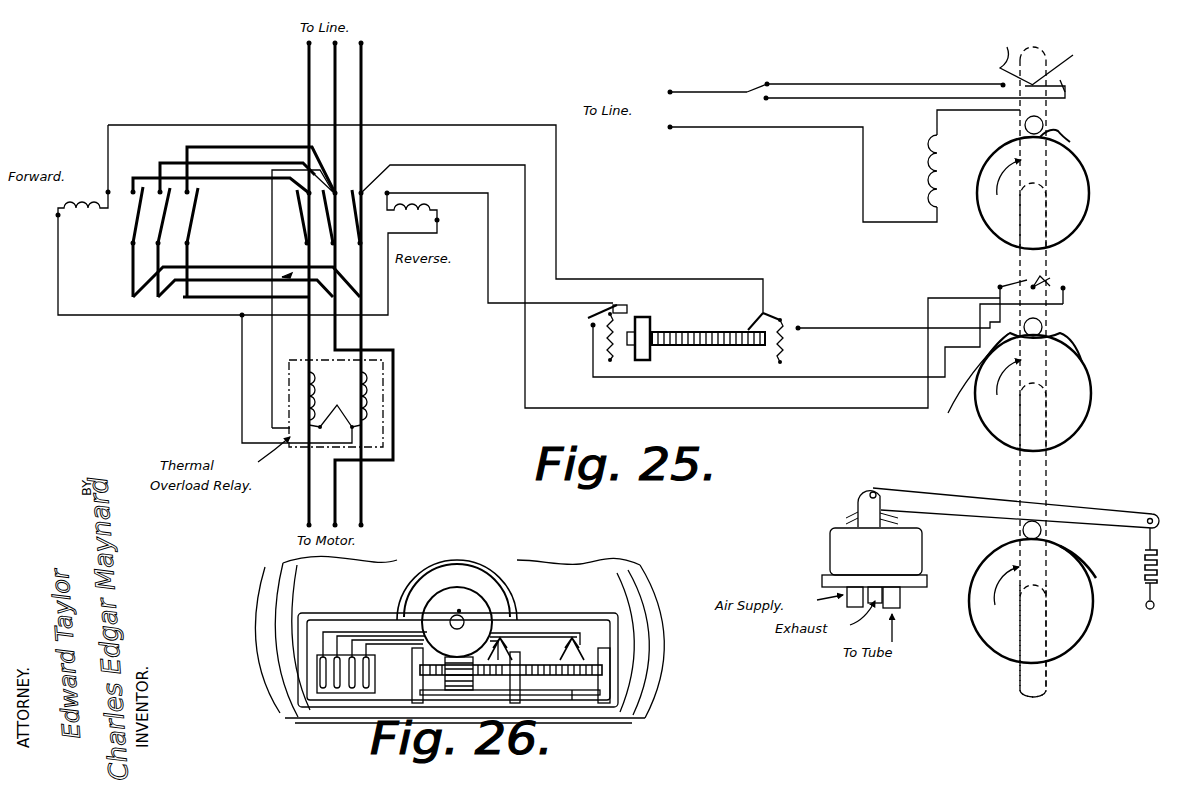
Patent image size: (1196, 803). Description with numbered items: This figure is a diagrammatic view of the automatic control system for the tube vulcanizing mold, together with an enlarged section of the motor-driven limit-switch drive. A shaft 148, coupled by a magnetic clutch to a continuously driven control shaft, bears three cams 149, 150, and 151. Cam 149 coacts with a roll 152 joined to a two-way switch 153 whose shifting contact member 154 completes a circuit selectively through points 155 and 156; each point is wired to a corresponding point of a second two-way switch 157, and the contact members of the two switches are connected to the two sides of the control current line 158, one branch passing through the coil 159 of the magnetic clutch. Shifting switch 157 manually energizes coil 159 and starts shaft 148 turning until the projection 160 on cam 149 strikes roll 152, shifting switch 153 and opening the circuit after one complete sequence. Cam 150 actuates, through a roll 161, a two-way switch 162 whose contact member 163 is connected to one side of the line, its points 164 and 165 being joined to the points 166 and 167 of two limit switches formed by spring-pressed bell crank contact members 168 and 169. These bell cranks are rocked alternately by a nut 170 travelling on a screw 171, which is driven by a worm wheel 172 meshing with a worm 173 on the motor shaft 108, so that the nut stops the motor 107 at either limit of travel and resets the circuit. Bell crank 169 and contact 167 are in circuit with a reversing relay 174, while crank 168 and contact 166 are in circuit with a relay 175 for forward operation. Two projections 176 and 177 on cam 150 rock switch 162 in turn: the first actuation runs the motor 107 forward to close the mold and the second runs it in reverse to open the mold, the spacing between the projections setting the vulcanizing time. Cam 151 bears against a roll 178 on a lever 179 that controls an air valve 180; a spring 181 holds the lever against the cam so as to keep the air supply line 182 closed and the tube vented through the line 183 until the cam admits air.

In FIG. 26, the motor 107 is at (265, 596).
In FIG. 26, the motor shaft 108 is at (425, 612).
In FIG. 25, the shaft 148 is at (1043, 482).
In FIG. 25, the cam 149 is at (1077, 198).
In FIG. 25, the cam 150 is at (1077, 410).
In FIG. 25, the cam 151 is at (1068, 640).
In FIG. 25, the roll 152 is at (1045, 126).
In FIG. 25, the two-way switch 153 is at (1075, 66).
In FIG. 25, the shifting contact member 154 is at (1008, 55).
In FIG. 25, the point 155 is at (1003, 84).
In FIG. 25, the point 156 is at (1064, 87).
In FIG. 25, the two-way switch 157 is at (752, 86).
In FIG. 25, the control current line 158 is at (703, 92).
In FIG. 25, the coil 159 is at (845, 166).
In FIG. 25, the projection 160 is at (1056, 134).
In FIG. 25, the roll 161 is at (1045, 329).
In FIG. 25, the two-way switch 162 is at (1040, 283).
In FIG. 25, the contact member 163 is at (1053, 279).
In FIG. 25, the point 164 is at (993, 289).
In FIG. 25, the point 165 is at (1067, 290).
In FIG. 25, the point 166 is at (593, 326).
In FIG. 26, the point 166 is at (462, 608).
In FIG. 25, the point 167 is at (798, 328).
In FIG. 26, the point 167 is at (572, 700).
In FIG. 25, the bell crank contact member 168 is at (617, 305).
In FIG. 26, the bell crank contact member 168 is at (490, 645).
In FIG. 25, the bell crank contact member 169 is at (770, 312).
In FIG. 26, the bell crank contact member 169 is at (592, 650).
In FIG. 25, the nut 170 is at (645, 328).
In FIG. 26, the nut 170 is at (520, 660).
In FIG. 25, the screw 171 is at (710, 337).
In FIG. 26, the screw 171 is at (570, 645).
In FIG. 26, the worm wheel 172 is at (395, 708).
In FIG. 26, the worm 173 is at (455, 592).
In FIG. 25, the reversing relay 174 is at (400, 215).
In FIG. 25, the relay 175 is at (87, 215).
In FIG. 25, the projection 176 is at (965, 388).
In FIG. 25, the projection 177 is at (1067, 343).
In FIG. 25, the roll 178 is at (1041, 531).
In FIG. 25, the lever 179 is at (1092, 513).
In FIG. 25, the air valve 180 is at (843, 550).
In FIG. 25, the spring 181 is at (1149, 584).
In FIG. 25, the air supply line 182 is at (845, 590).
In FIG. 25, the line 183 is at (900, 602).